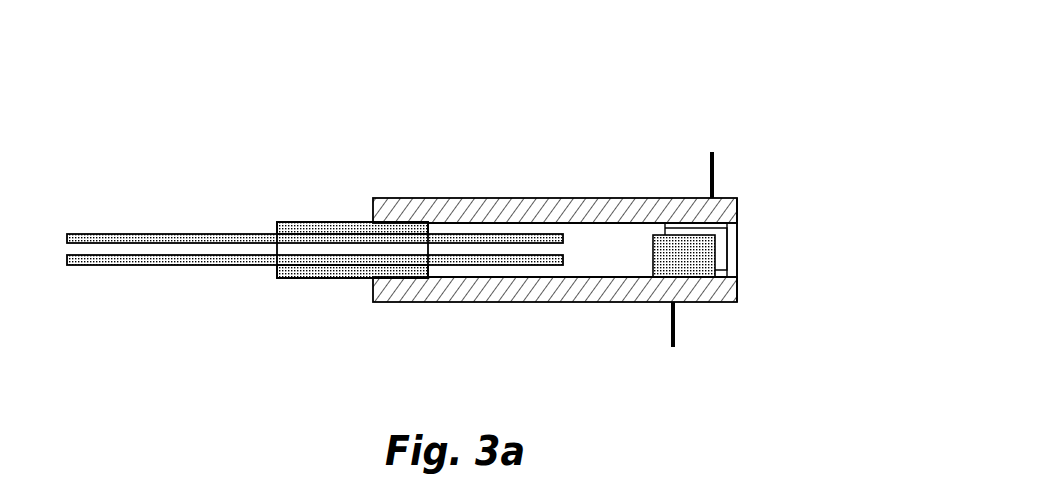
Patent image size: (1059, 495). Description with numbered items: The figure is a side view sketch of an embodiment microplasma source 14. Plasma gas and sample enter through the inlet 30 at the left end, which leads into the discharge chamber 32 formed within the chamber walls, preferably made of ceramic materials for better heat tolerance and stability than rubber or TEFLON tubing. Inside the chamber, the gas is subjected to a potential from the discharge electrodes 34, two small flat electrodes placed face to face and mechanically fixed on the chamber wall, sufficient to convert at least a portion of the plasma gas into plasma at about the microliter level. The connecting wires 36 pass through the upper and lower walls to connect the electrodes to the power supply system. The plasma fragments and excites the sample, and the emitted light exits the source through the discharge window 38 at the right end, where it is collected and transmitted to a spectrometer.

The microplasma source 14 is at (300, 101).
The inlet 30 is at (67, 247).
The discharge chamber 32 is at (583, 242).
The discharge electrodes 34 is at (678, 248).
The connecting wires 36 is at (711, 150).
The discharge window 38 is at (738, 250).